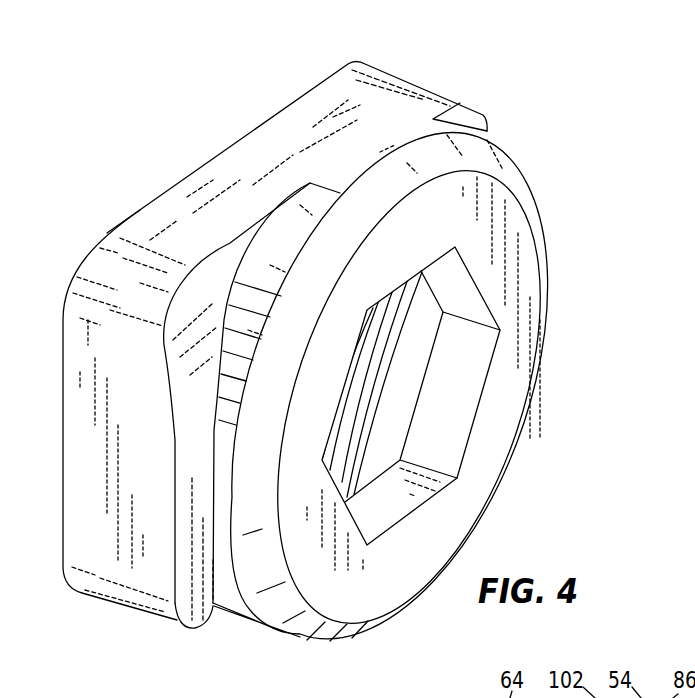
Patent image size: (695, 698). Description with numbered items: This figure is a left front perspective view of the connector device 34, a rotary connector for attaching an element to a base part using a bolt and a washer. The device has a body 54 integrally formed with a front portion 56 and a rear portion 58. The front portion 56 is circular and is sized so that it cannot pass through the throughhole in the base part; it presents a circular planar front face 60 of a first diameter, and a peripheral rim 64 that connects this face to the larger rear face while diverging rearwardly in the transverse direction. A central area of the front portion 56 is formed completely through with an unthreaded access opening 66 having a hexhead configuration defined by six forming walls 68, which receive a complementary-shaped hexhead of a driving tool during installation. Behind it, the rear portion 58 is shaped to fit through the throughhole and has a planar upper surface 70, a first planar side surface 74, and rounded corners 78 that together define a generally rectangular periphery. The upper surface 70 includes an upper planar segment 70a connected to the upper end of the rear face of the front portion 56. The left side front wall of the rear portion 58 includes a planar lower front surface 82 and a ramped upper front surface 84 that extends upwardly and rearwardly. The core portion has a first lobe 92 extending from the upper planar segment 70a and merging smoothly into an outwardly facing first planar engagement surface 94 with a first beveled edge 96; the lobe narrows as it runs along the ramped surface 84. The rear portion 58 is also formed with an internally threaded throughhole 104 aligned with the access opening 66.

The connector device 34 is at (520, 38).
The body 54 is at (494, 111).
The front portion 56 is at (552, 196).
The rear portion 58 is at (292, 80).
The front face 60 is at (518, 398).
The peripheral rim 64 is at (495, 153).
The access opening 66 is at (440, 442).
The forming walls 68 is at (470, 340).
The upper surface 70 is at (262, 141).
The upper planar segment 70a is at (386, 146).
The first side surface 74 is at (88, 474).
The rounded corners 78 is at (400, 72).
The lower front surface 82 is at (183, 483).
The ramped upper front surface 84 is at (190, 292).
The first lobe 92 is at (268, 268).
The first planar engagement surface 94 is at (228, 578).
The first beveled edge 96 is at (253, 612).
The internally threaded throughhole 104 is at (412, 318).